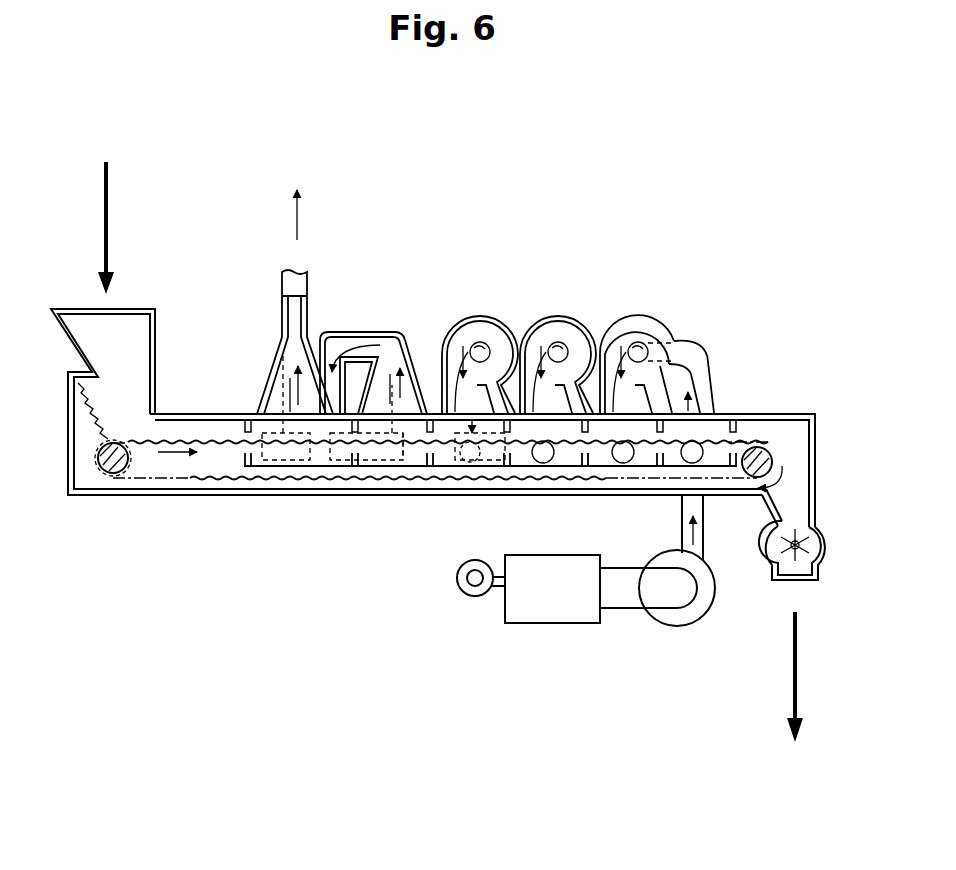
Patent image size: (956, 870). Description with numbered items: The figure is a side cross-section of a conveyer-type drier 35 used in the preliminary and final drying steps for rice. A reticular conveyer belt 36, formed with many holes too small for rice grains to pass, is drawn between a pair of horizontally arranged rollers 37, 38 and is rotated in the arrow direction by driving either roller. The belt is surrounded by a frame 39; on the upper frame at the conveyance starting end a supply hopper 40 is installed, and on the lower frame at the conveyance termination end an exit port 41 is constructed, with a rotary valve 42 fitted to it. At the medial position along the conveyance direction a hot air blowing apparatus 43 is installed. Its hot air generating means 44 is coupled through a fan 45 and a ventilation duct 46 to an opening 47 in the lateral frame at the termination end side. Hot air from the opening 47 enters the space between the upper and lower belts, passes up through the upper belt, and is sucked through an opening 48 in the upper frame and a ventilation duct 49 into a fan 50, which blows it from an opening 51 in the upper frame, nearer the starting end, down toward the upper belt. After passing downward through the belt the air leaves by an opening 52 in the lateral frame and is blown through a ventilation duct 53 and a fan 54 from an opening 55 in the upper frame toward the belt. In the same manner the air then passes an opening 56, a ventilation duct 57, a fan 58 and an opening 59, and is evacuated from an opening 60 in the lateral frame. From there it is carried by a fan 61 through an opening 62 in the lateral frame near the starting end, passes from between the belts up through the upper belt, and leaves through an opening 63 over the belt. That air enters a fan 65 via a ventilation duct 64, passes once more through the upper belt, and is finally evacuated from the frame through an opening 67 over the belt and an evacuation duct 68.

The drier 35 is at (735, 246).
The conveyer belt 36 is at (183, 438).
The roller 37 is at (118, 477).
The roller 38 is at (780, 460).
The frame 39 is at (163, 497).
The supply hopper 40 is at (80, 313).
The exit port 41 is at (805, 505).
The rotary valve 42 is at (832, 546).
The hot air blowing apparatus 43 is at (573, 234).
The hot air generating means 44 is at (560, 624).
The fan 45 is at (690, 627).
The ventilation duct 46 is at (703, 544).
The opening 47 is at (690, 464).
The opening 48 is at (705, 405).
The ventilation duct 49 is at (703, 342).
The fan 50 is at (649, 318).
The opening 51 is at (605, 330).
The opening 52 is at (623, 464).
The ventilation duct 53 is at (589, 322).
The fan 54 is at (554, 318).
The opening 55 is at (528, 336).
The opening 56 is at (537, 464).
The ventilation duct 57 is at (507, 320).
The fan 58 is at (470, 318).
The opening 59 is at (438, 345).
The opening 60 is at (480, 462).
The fan 61 is at (370, 497).
The opening 62 is at (393, 497).
The opening 63 is at (380, 360).
The ventilation duct 64 is at (352, 333).
The fan 65 is at (295, 497).
The opening 67 is at (266, 413).
The evacuation duct 68 is at (282, 285).